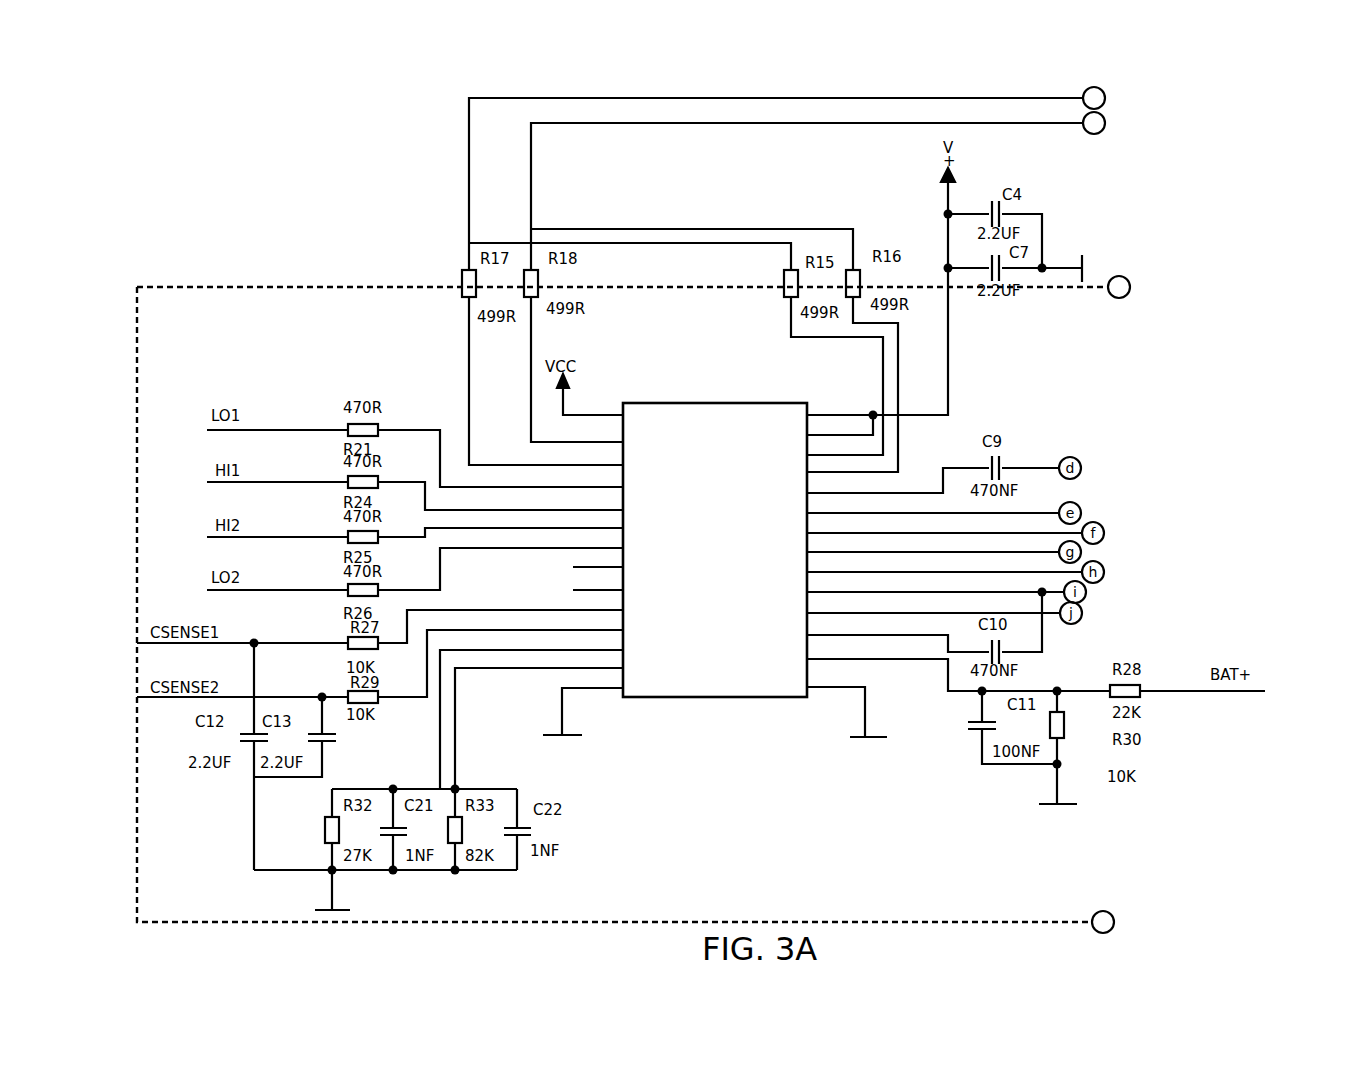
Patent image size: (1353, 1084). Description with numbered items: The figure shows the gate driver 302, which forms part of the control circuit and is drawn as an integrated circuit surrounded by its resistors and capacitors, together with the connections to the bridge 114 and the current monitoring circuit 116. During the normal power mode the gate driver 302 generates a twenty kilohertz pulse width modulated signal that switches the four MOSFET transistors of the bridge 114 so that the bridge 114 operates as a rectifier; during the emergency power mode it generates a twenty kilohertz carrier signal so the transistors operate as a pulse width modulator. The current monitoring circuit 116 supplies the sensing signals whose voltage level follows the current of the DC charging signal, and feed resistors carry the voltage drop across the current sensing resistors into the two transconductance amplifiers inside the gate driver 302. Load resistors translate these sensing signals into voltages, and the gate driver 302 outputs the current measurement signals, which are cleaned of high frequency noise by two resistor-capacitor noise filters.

The bridge 114 is at (209, 287).
The current monitoring circuit 116 is at (584, 85).
The gate driver 302 is at (715, 697).